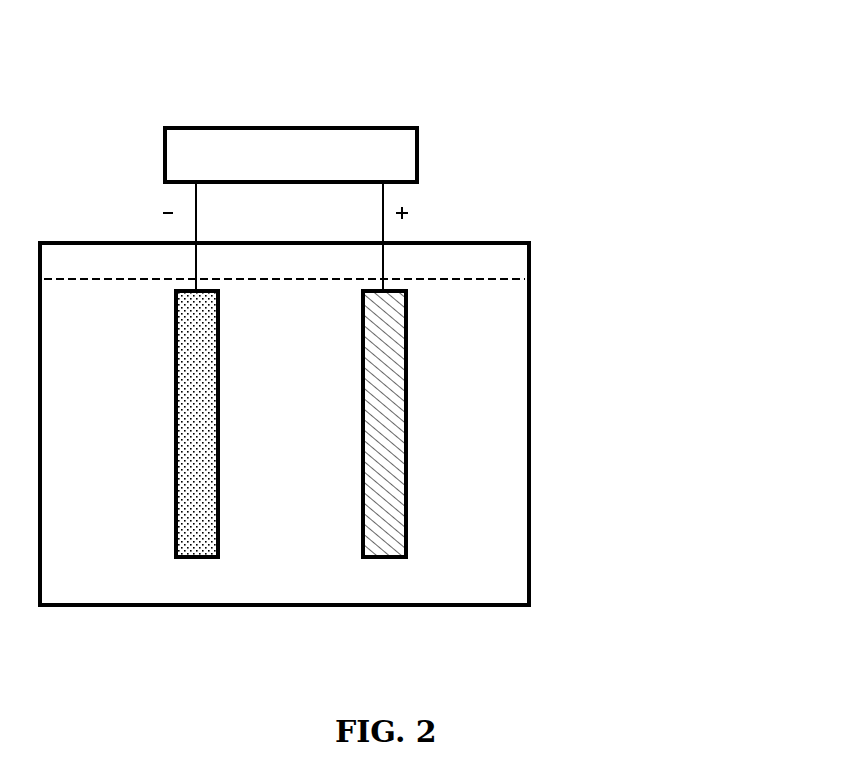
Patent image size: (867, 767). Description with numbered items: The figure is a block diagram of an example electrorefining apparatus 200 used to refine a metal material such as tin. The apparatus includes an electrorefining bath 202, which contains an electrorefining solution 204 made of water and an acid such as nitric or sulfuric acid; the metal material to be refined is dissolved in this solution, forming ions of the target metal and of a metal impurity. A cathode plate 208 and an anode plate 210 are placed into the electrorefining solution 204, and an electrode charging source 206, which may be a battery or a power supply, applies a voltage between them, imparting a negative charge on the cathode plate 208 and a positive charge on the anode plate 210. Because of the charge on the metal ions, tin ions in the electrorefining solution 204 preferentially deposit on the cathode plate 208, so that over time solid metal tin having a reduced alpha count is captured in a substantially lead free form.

The electrorefining apparatus 200 is at (618, 148).
The electrorefining bath 202 is at (529, 317).
The electrorefining solution 204 is at (490, 555).
The electrode charging source 206 is at (315, 127).
The cathode plate 208 is at (175, 425).
The anode plate 210 is at (405, 425).